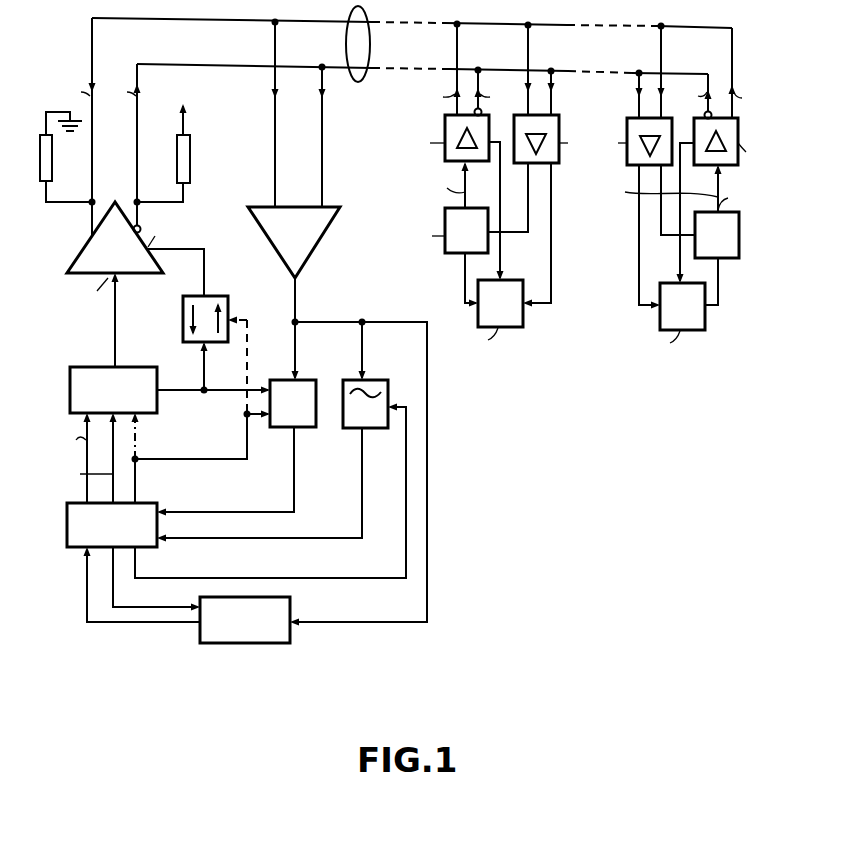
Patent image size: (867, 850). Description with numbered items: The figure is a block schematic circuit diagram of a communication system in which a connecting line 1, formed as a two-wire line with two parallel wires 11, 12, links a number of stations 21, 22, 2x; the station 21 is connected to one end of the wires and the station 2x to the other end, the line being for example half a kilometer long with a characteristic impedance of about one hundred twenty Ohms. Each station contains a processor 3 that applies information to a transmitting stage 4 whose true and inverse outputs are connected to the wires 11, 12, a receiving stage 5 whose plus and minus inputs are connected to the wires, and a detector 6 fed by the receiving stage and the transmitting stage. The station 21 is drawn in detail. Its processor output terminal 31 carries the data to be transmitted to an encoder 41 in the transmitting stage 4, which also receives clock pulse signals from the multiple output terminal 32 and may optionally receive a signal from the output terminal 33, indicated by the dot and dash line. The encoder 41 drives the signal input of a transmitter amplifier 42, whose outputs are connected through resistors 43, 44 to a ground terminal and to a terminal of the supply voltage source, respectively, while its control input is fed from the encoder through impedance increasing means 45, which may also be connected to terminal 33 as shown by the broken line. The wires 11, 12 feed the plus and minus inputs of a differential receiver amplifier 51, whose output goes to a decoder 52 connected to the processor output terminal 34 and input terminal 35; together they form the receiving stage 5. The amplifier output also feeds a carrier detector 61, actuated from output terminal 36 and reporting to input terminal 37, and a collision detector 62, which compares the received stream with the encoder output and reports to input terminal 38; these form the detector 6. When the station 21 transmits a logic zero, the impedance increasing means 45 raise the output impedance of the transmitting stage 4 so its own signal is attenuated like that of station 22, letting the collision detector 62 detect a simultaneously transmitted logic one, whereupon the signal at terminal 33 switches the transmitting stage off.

The connecting line 1 is at (367, 16).
The wire 11 is at (219, 6).
The wire 12 is at (245, 67).
The station 21 is at (239, 692).
The station 22 is at (515, 390).
The station 2x is at (680, 390).
The processor 3 is at (67, 530).
The output terminal 31 is at (80, 502).
The multiple output terminal 32 is at (113, 502).
The output terminal 33 is at (137, 502).
The output terminal 34 is at (113, 550).
The input terminal 35 is at (84, 551).
The output terminal 36 is at (135, 549).
The input terminal 37 is at (160, 541).
The input terminal 38 is at (160, 516).
The transmitting stage 4 is at (72, 326).
The encoder 41 is at (157, 400).
The transmitter amplifier 42 is at (86, 244).
The resistor 43 is at (52, 162).
The resistor 44 is at (177, 165).
The impedance increasing means 45 is at (183, 322).
The receiving stage 5 is at (457, 564).
The receiver amplifier 51 is at (322, 237).
The decoder 52 is at (290, 637).
The detector 6 is at (337, 456).
The carrier detector 61 is at (386, 384).
The collision detector 62 is at (316, 384).